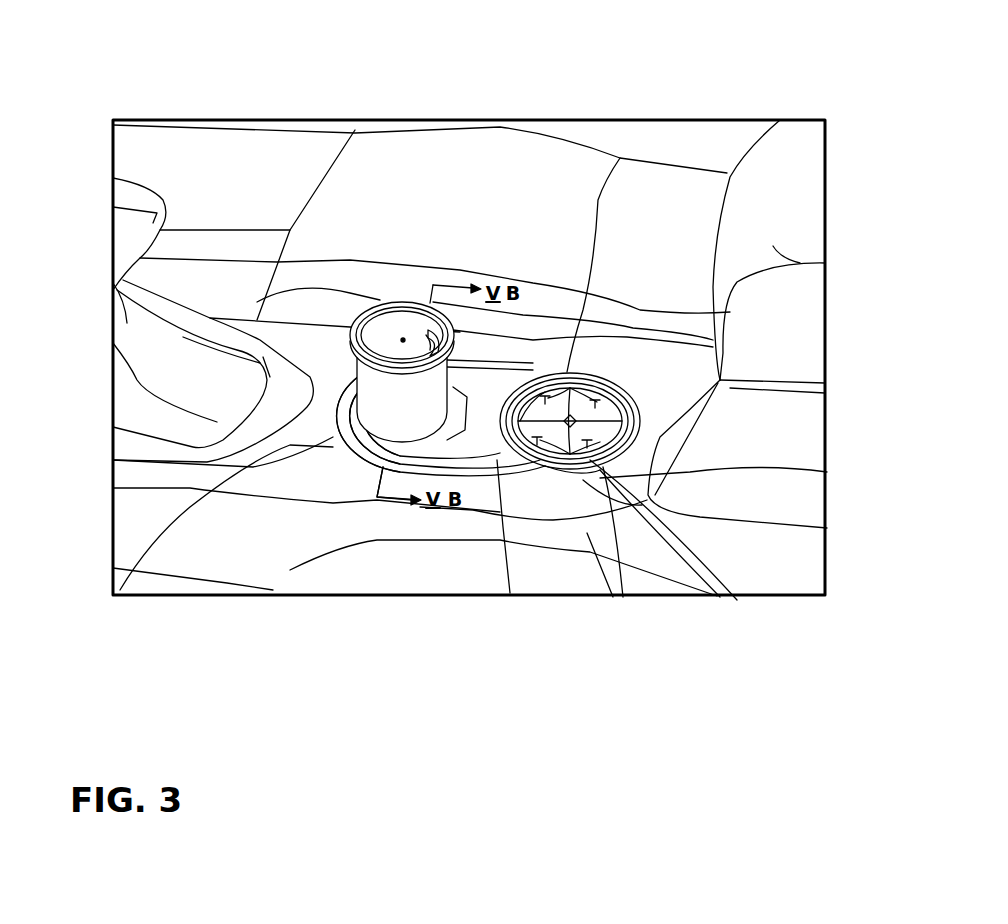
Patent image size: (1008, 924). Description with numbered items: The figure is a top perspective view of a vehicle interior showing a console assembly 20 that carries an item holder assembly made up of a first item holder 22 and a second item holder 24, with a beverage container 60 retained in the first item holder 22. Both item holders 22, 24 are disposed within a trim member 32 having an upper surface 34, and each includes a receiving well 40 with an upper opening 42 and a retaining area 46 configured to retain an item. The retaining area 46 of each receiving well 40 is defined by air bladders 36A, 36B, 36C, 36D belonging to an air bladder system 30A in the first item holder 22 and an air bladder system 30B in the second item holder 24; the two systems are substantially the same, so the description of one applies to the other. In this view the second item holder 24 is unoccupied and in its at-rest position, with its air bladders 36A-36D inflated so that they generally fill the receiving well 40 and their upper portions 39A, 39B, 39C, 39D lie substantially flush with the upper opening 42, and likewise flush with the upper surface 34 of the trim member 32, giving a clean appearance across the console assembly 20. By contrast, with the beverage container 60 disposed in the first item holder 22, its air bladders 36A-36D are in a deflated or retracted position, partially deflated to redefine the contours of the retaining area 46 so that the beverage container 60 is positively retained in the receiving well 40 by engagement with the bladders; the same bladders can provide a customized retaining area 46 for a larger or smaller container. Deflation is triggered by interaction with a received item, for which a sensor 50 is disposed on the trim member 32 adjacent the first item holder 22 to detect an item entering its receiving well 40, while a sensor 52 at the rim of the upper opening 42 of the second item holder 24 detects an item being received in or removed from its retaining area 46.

The console assembly 20 is at (115, 575).
The first item holder 22 is at (325, 365).
The second item holder 24 is at (600, 372).
The air bladder system 30A is at (322, 438).
The air bladder system 30B is at (720, 380).
The trim member 32 is at (573, 475).
The upper surface 34 is at (533, 470).
The air bladder 36A is at (467, 390).
The air bladder 36B is at (528, 382).
The air bladder 36C is at (335, 400).
The air bladder 36D is at (450, 450).
The upper portion 39A is at (545, 388).
The upper portion 39B is at (650, 402).
The upper portion 39C is at (553, 463).
The upper portion 39D is at (640, 440).
The receiving well 40 is at (318, 458).
The upper opening 42 is at (510, 593).
The retaining area 46 is at (377, 443).
The sensor 50 is at (370, 457).
The sensor 52 is at (573, 502).
The beverage container 60 is at (376, 296).